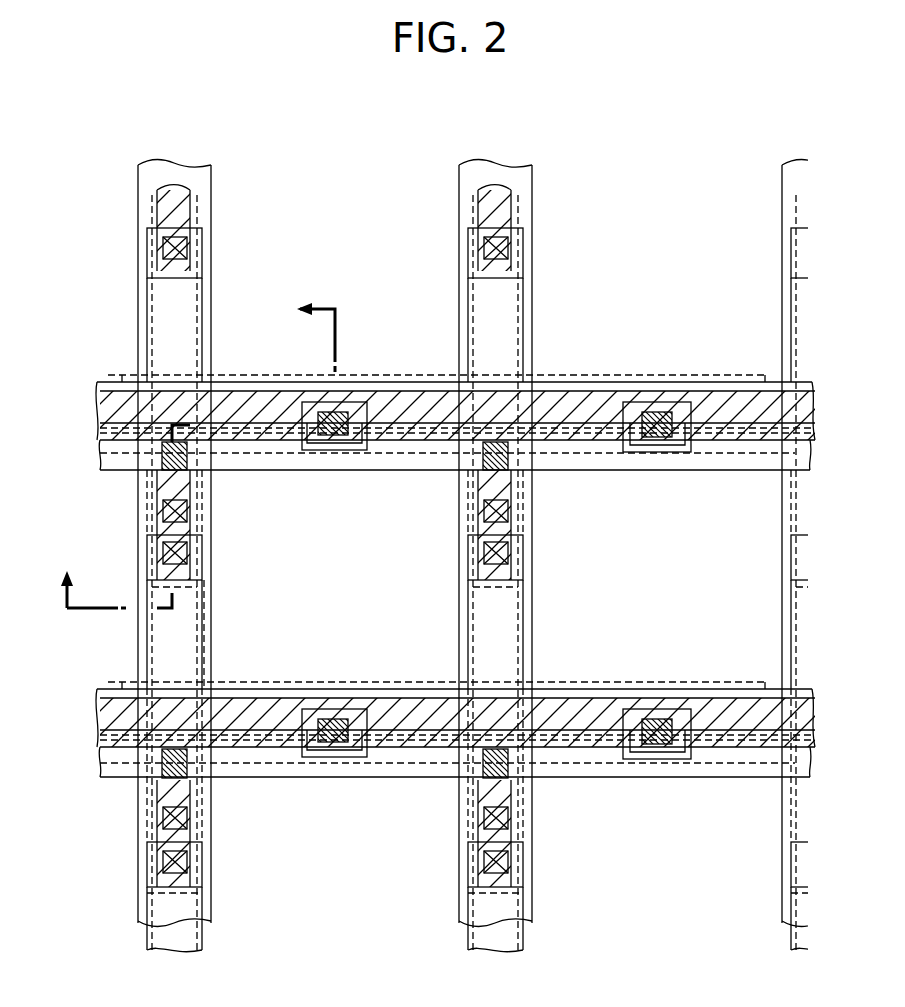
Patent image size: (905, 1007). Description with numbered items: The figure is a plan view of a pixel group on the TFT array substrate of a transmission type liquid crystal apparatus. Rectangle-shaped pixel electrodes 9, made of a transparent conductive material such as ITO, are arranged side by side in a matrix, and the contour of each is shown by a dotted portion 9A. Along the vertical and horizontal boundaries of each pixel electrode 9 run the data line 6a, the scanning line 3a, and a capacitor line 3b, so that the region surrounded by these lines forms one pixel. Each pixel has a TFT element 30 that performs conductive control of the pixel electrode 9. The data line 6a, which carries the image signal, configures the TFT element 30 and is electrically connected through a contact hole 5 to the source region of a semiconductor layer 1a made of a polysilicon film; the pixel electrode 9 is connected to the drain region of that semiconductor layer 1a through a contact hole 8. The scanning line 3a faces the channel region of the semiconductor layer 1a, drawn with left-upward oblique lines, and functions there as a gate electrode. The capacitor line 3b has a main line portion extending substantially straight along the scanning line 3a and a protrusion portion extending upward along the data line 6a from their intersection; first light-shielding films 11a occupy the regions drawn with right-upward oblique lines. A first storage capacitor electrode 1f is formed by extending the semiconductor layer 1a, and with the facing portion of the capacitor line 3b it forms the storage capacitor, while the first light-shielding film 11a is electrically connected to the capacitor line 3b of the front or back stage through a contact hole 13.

The TFT element 30 is at (238, 845).
The data line 6a is at (531, 555).
The scanning line 3a is at (352, 778).
The capacitor line 3b is at (325, 689).
The contact hole 13 is at (187, 553).
The contact hole 5 is at (510, 818).
The contact hole 8 is at (653, 747).
The pixel electrode 9 is at (403, 545).
The dotted portion 9A is at (703, 456).
The first light-shielding film 11a is at (520, 480).
The semiconductor layer 1a is at (507, 762).
The first storage capacitor electrode 1f is at (215, 612).